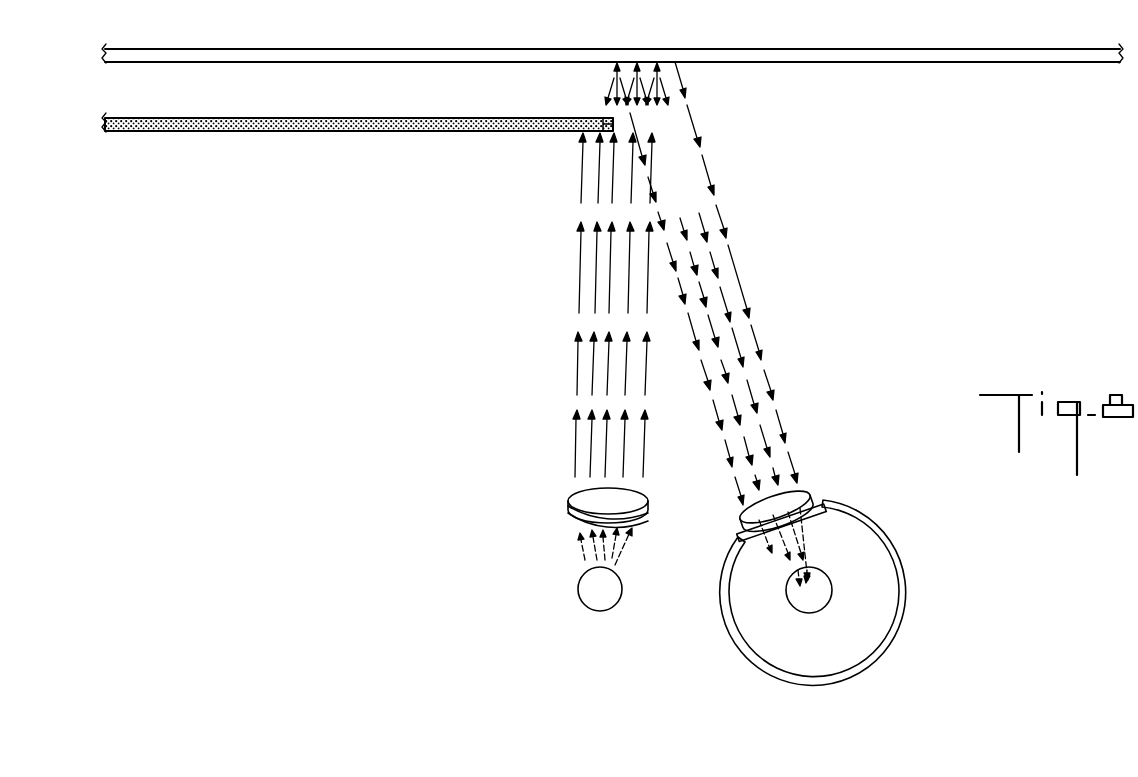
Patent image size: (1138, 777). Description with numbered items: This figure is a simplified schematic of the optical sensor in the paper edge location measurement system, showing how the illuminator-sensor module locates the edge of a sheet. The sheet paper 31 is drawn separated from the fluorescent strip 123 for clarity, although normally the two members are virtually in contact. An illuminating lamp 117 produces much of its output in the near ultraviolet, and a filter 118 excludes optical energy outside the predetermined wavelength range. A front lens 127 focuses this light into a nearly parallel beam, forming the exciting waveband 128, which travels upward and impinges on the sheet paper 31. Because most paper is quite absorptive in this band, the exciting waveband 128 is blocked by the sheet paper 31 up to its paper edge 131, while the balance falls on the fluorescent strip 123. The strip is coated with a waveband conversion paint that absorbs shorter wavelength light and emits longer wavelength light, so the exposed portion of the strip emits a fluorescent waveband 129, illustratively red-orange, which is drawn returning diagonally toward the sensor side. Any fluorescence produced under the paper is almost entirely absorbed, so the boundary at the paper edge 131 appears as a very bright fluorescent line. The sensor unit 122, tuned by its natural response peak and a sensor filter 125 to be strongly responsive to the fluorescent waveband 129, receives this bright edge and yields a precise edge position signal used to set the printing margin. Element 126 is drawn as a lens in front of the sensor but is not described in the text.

The sheet paper 31 is at (190, 131).
The illuminating lamp 117 is at (518, 623).
The filter 118 is at (570, 515).
The sensor unit 122 is at (833, 593).
The fluorescent strip 123 is at (852, 63).
The sensor filter 125 is at (822, 516).
The tilted eyepiece lens 126 is at (805, 493).
The front lens 127 is at (587, 495).
The exciting waveband 128 is at (573, 354).
The fluorescent waveband 129 is at (752, 305).
The paper edge 131 is at (582, 131).